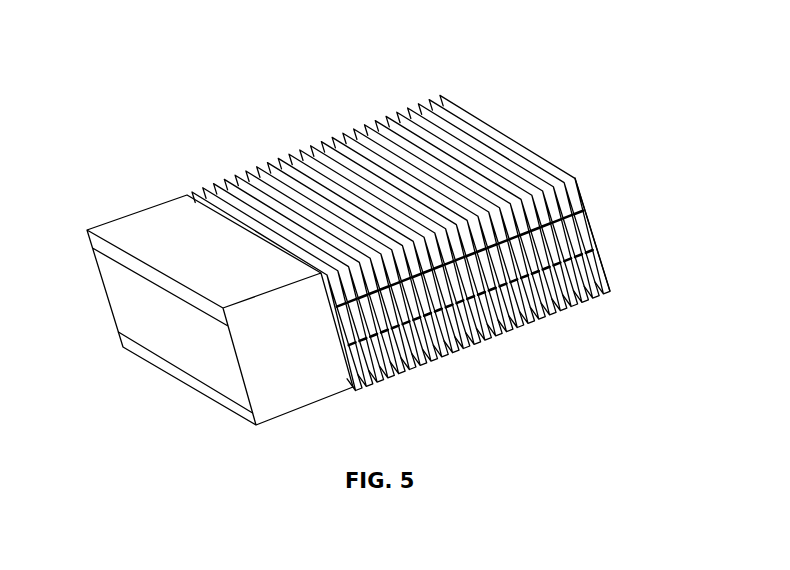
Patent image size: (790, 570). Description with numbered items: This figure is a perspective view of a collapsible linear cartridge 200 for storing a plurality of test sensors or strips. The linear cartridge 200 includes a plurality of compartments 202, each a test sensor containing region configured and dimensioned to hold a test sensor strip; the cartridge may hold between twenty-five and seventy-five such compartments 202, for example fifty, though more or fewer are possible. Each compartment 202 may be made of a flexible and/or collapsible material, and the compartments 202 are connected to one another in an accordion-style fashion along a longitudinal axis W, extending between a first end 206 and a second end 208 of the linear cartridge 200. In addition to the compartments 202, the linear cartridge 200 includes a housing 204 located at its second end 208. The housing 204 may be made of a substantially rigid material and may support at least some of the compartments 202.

The linear cartridge 200 is at (366, 260).
The compartments 202 is at (435, 95).
The housing 204 is at (190, 329).
The first end 206 is at (605, 297).
The second end 208 is at (253, 430).
The longitudinal axis W is at (592, 218).